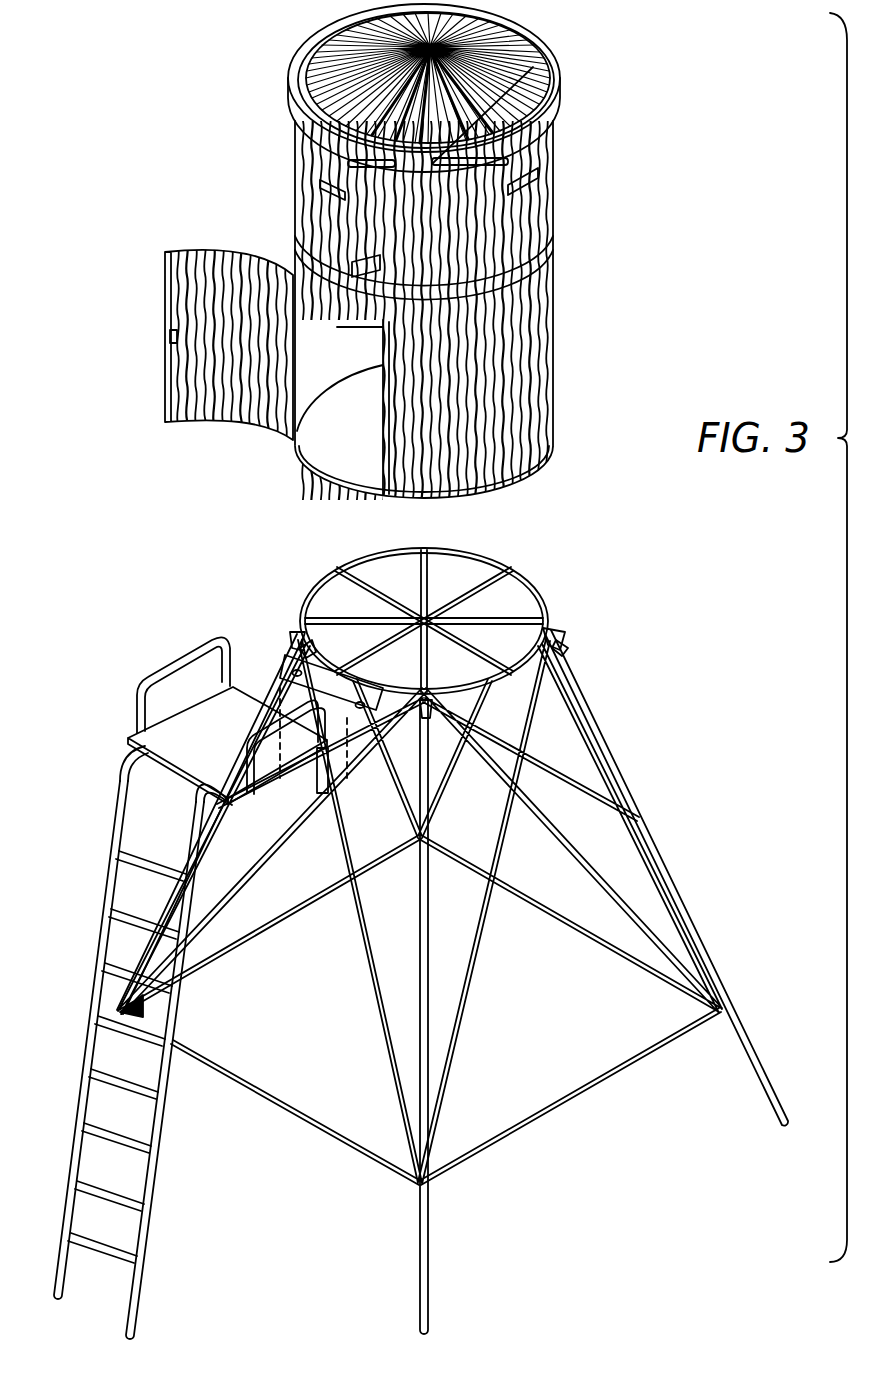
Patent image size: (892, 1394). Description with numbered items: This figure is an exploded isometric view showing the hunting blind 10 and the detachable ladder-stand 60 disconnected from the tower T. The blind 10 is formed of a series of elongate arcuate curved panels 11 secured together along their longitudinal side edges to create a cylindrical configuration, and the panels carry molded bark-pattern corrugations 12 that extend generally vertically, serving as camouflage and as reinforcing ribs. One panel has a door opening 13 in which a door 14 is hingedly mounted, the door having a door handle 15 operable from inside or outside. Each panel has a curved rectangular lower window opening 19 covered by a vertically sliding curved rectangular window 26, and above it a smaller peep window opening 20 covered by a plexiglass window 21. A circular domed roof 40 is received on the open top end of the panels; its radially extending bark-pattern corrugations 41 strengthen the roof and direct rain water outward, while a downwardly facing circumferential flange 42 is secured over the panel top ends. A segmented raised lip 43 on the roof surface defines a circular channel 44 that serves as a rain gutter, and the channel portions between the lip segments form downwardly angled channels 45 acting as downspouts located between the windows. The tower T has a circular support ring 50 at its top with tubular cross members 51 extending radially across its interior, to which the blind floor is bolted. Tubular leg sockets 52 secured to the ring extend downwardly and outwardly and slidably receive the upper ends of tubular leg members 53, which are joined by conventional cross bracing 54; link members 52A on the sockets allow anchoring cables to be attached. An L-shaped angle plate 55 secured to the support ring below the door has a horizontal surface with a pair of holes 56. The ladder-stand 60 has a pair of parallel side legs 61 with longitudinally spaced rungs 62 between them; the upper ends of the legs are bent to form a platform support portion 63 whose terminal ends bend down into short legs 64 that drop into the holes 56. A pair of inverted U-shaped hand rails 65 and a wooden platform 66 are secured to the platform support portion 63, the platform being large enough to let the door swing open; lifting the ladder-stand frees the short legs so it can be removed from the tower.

The hunting blind 10 is at (594, 343).
The arcuate curved panel 11 is at (295, 150).
The corrugations 12 is at (548, 395).
The door opening 13 is at (358, 325).
The door 14 is at (168, 298).
The door handle 15 is at (170, 340).
The lower window opening 19 is at (422, 251).
The curved rectangular window 26 is at (300, 224).
The peep window opening 20 is at (422, 184).
The plexiglass window 21 is at (320, 190).
The domed roof 40 is at (533, 40).
The corrugations 41 is at (322, 50).
The circumferential flange 42 is at (548, 153).
The raised ridge or lip 43 is at (303, 123).
The channel 44 is at (302, 90).
The downwardly angled channels 45 is at (534, 72).
The tower T is at (652, 754).
The circular support ring 50 is at (514, 560).
The tubular cross members 51 is at (370, 612).
The tubular leg sockets 52 is at (294, 640).
The link members 52A is at (566, 650).
The tubular leg members 53 is at (72, 1130).
The cross bracing 54 is at (226, 882).
The L-shaped angle plate 55 is at (310, 660).
The holes 56 is at (292, 668).
The detachable ladder-stand 60 is at (105, 773).
The side legs 61 is at (112, 886).
The rungs 62 is at (106, 944).
The platform support portion 63 is at (140, 775).
The short legs 64 is at (318, 793).
The safety grab bars or hand rails 65 is at (182, 660).
The wooden platform or landing 66 is at (230, 764).